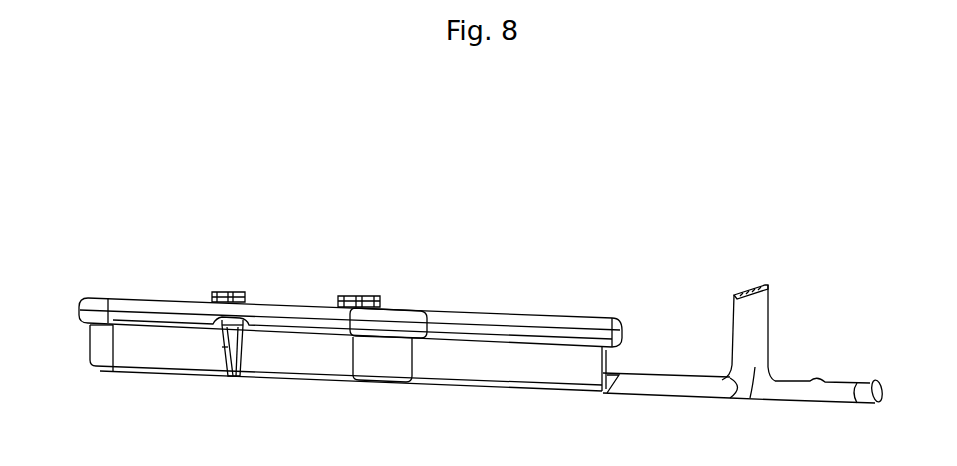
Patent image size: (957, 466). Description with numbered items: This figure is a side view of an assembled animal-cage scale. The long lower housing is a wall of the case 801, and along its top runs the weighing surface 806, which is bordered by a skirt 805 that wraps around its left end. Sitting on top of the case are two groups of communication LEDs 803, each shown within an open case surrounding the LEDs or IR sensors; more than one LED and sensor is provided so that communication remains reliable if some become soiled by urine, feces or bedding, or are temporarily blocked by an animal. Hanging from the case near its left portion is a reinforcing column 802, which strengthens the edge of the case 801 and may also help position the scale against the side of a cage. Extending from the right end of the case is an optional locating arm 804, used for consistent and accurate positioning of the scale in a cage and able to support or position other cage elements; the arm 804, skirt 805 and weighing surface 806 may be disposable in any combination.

The wall of the case 801 is at (302, 353).
The reinforcing column 802 is at (221, 353).
The groups of communication LEDs 803 is at (225, 292).
The locating arm 804 is at (686, 392).
The skirt 805 is at (90, 314).
The weighing surface 806 is at (469, 312).